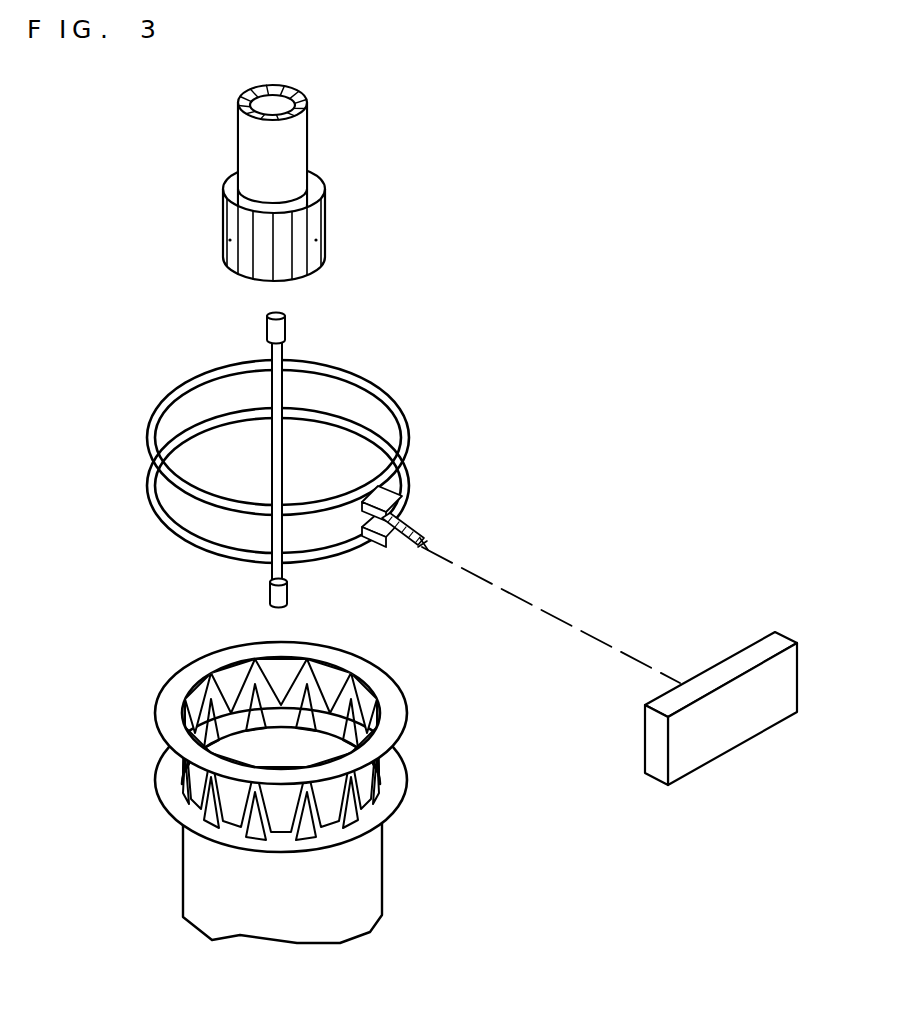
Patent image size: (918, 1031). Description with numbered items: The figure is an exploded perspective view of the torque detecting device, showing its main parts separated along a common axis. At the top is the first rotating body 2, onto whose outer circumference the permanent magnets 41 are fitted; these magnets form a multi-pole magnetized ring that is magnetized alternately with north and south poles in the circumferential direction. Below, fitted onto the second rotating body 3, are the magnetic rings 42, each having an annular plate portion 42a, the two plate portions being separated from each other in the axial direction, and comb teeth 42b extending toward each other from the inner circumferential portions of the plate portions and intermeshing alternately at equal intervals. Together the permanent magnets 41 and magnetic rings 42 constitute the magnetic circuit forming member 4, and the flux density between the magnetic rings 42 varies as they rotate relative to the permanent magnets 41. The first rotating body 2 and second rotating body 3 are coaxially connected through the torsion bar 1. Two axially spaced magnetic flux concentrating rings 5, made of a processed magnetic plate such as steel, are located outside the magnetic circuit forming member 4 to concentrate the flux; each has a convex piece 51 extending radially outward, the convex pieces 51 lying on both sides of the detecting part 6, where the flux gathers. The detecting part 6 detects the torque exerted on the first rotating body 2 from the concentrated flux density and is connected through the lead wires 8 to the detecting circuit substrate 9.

The torsion bar 1 is at (282, 353).
The first rotating body 2 is at (300, 143).
The second rotating body 3 is at (370, 883).
The magnetic circuit forming member 4 is at (281, 509).
The permanent magnets 41 is at (323, 220).
The magnetic rings 42 is at (309, 720).
The annular plate portions 42a is at (398, 705).
The comb teeth 42b is at (222, 697).
The magnetic flux concentrating rings 5 is at (393, 398).
The convex pieces 51 is at (385, 495).
The detecting part 6 is at (400, 517).
The lead wires 8 is at (419, 540).
The detecting circuit substrate 9 is at (733, 653).